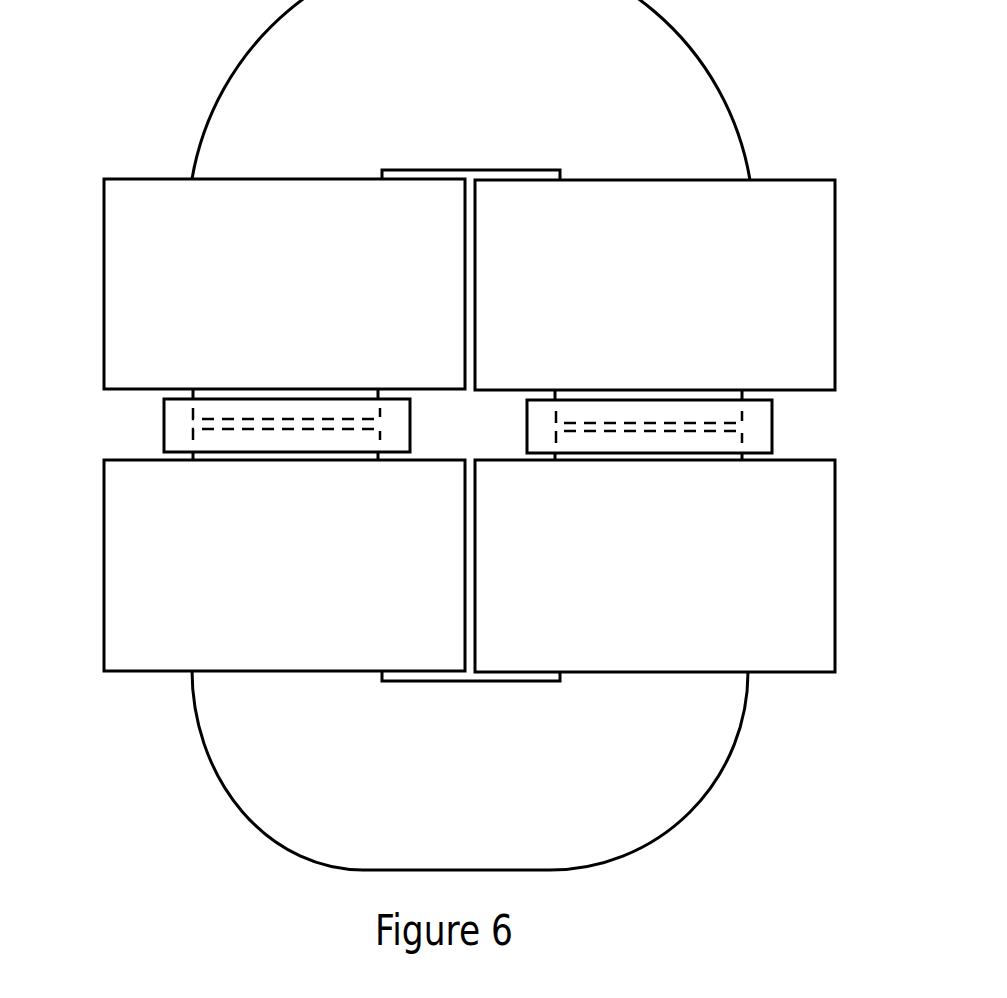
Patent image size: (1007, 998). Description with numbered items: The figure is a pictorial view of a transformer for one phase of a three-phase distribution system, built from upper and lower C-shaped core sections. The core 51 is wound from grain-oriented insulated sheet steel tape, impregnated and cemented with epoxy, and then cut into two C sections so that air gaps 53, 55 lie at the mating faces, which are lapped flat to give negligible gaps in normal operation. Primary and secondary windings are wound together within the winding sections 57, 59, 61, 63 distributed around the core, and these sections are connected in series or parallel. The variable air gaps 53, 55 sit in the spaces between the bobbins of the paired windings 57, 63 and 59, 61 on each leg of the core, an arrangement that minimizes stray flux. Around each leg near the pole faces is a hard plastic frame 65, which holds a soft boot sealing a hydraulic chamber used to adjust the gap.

The core 51 is at (727, 102).
The air gap 53 is at (695, 425).
The air gap 55 is at (297, 425).
The winding section 57 is at (250, 284).
The winding section 59 is at (828, 222).
The winding section 61 is at (826, 611).
The winding section 63 is at (111, 580).
The plastic frame 65 is at (164, 410).